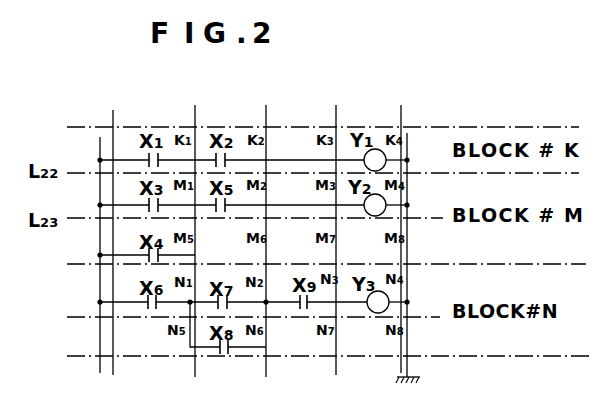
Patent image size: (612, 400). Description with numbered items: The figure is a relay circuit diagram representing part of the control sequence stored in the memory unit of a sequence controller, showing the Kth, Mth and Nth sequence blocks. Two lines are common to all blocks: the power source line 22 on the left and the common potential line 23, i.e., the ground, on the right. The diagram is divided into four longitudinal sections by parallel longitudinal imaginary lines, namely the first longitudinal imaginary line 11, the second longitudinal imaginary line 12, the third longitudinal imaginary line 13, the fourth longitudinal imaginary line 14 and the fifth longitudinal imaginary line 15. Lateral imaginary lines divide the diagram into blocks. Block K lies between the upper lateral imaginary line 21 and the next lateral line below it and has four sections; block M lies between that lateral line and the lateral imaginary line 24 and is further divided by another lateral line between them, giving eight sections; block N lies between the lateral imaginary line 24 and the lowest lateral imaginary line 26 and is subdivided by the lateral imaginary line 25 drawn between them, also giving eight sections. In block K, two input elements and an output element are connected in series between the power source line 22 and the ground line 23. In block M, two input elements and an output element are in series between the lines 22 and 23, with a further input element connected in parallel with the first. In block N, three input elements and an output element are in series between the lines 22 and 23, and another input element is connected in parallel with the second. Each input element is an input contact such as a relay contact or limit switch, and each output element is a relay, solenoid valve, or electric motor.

The power source line 22 is at (98, 159).
The common potential line 23 is at (407, 140).
The longitudinal imaginary line 11 is at (117, 227).
The longitudinal imaginary line 12 is at (190, 228).
The longitudinal imaginary line 13 is at (266, 228).
The longitudinal imaginary line 14 is at (334, 227).
The longitudinal imaginary line 15 is at (395, 226).
The lateral imaginary line 21 is at (303, 124).
The lateral imaginary line 24 is at (307, 265).
The lateral imaginary line 25 is at (234, 311).
The lateral imaginary line 26 is at (310, 358).